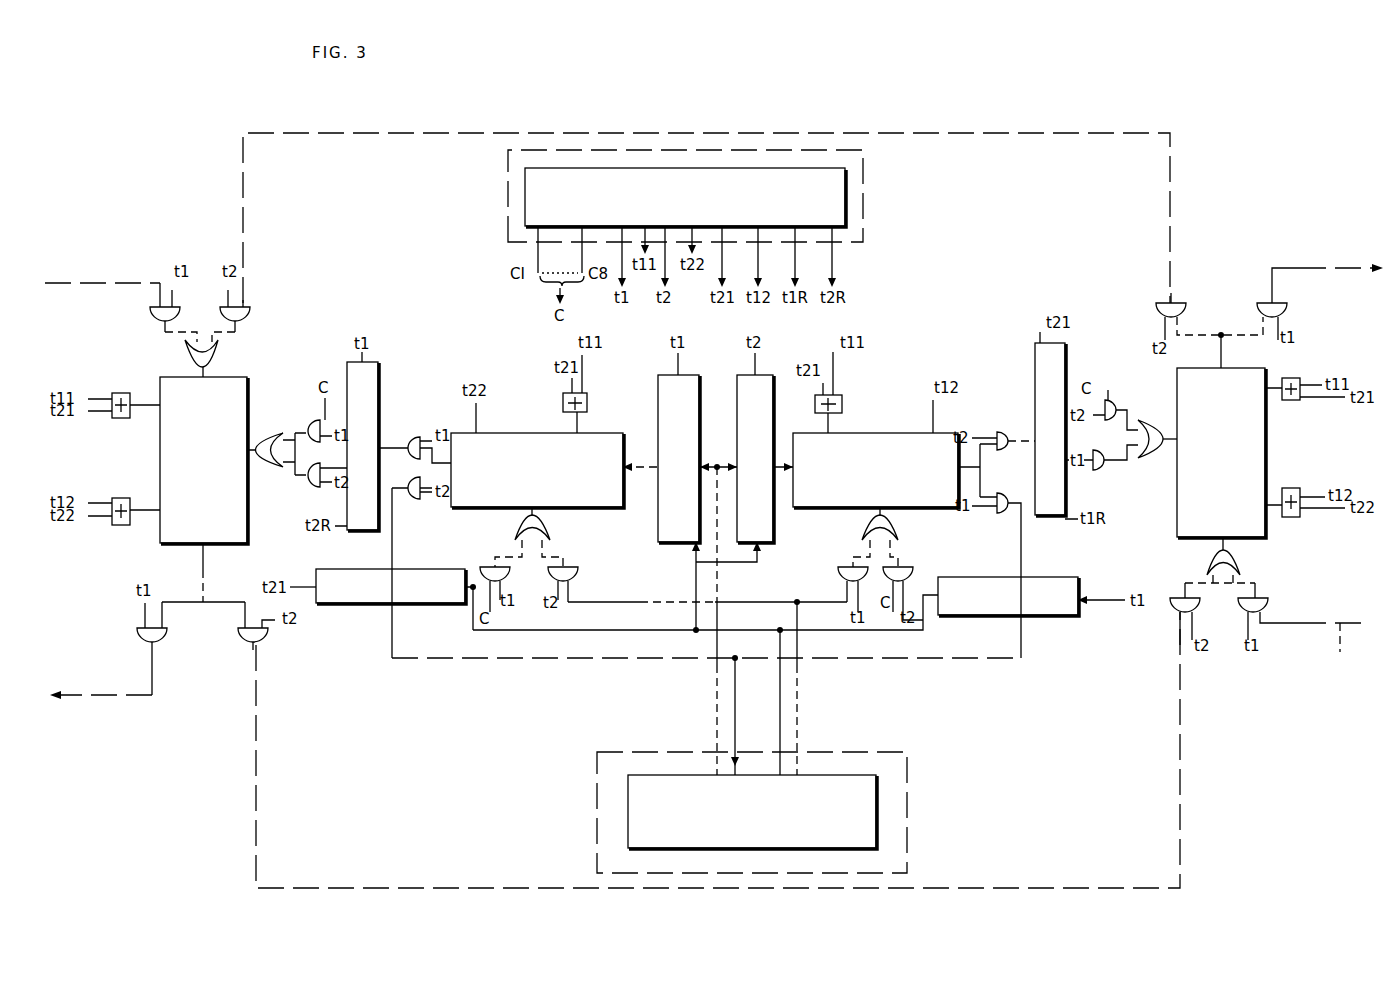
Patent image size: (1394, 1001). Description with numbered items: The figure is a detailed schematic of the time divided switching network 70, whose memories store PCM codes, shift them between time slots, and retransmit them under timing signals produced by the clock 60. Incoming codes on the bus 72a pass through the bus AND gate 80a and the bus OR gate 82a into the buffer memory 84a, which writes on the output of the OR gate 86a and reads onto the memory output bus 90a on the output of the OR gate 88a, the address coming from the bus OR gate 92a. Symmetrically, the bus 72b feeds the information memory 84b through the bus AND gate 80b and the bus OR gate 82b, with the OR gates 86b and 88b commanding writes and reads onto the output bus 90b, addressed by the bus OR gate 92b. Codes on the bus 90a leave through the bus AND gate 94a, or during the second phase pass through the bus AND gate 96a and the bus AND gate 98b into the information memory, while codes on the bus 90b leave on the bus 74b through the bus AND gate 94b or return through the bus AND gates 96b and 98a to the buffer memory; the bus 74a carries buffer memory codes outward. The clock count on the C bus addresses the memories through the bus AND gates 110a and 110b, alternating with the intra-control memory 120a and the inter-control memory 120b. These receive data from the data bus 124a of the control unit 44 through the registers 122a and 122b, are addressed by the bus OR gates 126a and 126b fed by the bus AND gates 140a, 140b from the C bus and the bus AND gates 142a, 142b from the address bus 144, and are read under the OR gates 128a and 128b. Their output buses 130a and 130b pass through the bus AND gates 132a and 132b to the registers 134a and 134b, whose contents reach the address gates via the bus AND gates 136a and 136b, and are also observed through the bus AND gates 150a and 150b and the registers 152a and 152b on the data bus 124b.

The control unit 44 is at (876, 812).
The clock 60 is at (525, 193).
The time divided switching network 70 is at (1238, 814).
The line bus 72a is at (62, 283).
The bus 72b is at (1333, 650).
The bus 74a is at (80, 695).
The bus 74b is at (1356, 254).
The bus AND gate 80a is at (158, 322).
The bus AND gate 80b is at (1268, 600).
The bus OR gate 82a is at (218, 350).
The bus OR gate 82b is at (1243, 560).
The buffer memory 84a is at (247, 380).
The information memory 84b is at (1177, 382).
The OR gate 86a is at (117, 498).
The OR gate 86b is at (1290, 400).
The OR gate 88a is at (119, 418).
The OR gate 88b is at (1295, 488).
The memory output bus 90a is at (210, 560).
The information memory output bus 90b is at (1225, 346).
The bus OR gate 92a is at (263, 435).
The bus OR gate 92b is at (1150, 462).
The bus AND gate 94a is at (160, 645).
The bus AND gate 94b is at (1287, 308).
The bus AND gate 96a is at (262, 645).
The bus AND gate 96b is at (1183, 308).
The bus AND gate 98a is at (250, 312).
The bus AND gate 98b is at (1172, 605).
The bus AND gate 110a is at (323, 432).
The bus AND gate 110b is at (1108, 400).
The intra-control memory 120a is at (497, 433).
The inter-control memory 120b is at (845, 433).
The register 122a is at (658, 421).
The register 122b is at (768, 375).
The data bus 124a is at (725, 588).
The data bus 124b is at (735, 702).
The bus OR gate 126a is at (552, 525).
The bus OR gate 126b is at (865, 532).
The OR gate 128a is at (588, 396).
The OR gate 128b is at (842, 400).
The output bus 130a is at (417, 468).
The bus 130b is at (982, 462).
The bus AND gate 132a is at (400, 440).
The bus AND gate 132b is at (998, 430).
The register 134a is at (380, 385).
The register 134b is at (1066, 366).
The bus AND gate 136a is at (306, 487).
The bus AND gate 136b is at (1103, 470).
The bus AND gate 140a is at (482, 565).
The bus AND gate 140b is at (910, 578).
The bus AND gate 142a is at (568, 566).
The bus AND gate 142b is at (843, 565).
The address bus 144 is at (797, 733).
The bus AND gate 150a is at (412, 499).
The bus AND gate 150b is at (1012, 513).
The register 152a is at (348, 603).
The register 152b is at (1040, 615).